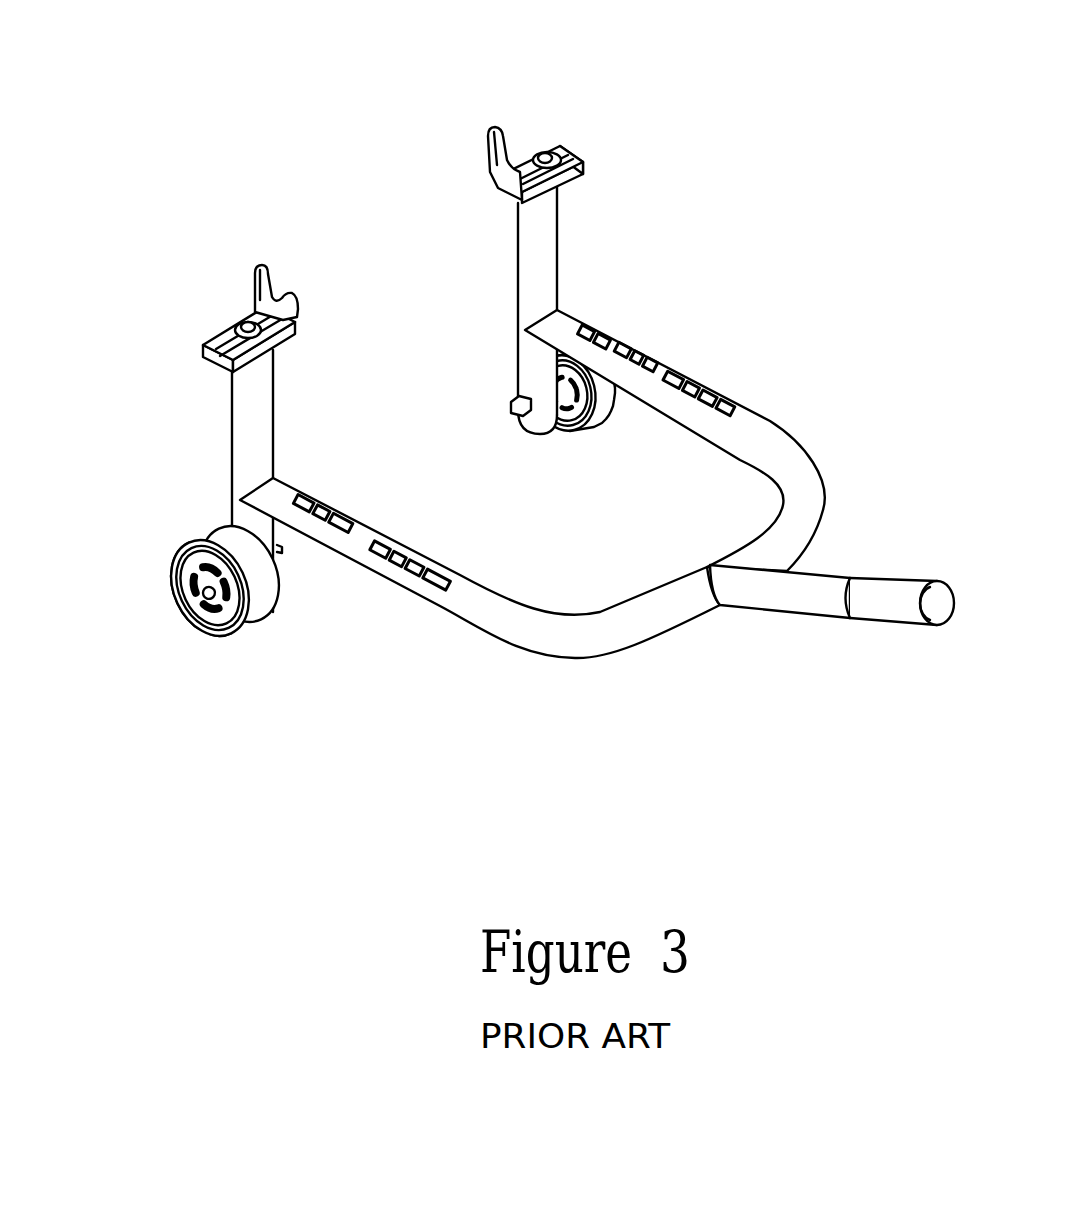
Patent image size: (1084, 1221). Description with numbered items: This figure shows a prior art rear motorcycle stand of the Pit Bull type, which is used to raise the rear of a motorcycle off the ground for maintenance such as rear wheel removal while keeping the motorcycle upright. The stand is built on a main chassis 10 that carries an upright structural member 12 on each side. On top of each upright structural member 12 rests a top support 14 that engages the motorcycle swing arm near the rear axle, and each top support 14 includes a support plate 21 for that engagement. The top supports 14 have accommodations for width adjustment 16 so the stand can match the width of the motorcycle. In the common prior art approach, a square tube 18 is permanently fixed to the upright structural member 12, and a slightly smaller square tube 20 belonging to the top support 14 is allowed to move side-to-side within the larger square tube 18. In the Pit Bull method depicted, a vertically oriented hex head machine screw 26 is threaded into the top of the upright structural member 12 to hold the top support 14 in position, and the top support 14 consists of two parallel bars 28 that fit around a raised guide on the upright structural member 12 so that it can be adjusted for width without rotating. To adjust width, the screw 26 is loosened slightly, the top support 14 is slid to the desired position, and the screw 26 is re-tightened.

The main chassis 10 is at (849, 485).
The upright structural member 12 is at (263, 437).
The top support 14 is at (375, 219).
The width adjustment 16 is at (375, 219).
The square tube 18 is at (253, 357).
The smaller square tube 20 is at (213, 363).
The support plate 21 is at (260, 283).
The hex head machine screw 26 is at (237, 318).
The parallel bars 28 is at (210, 343).